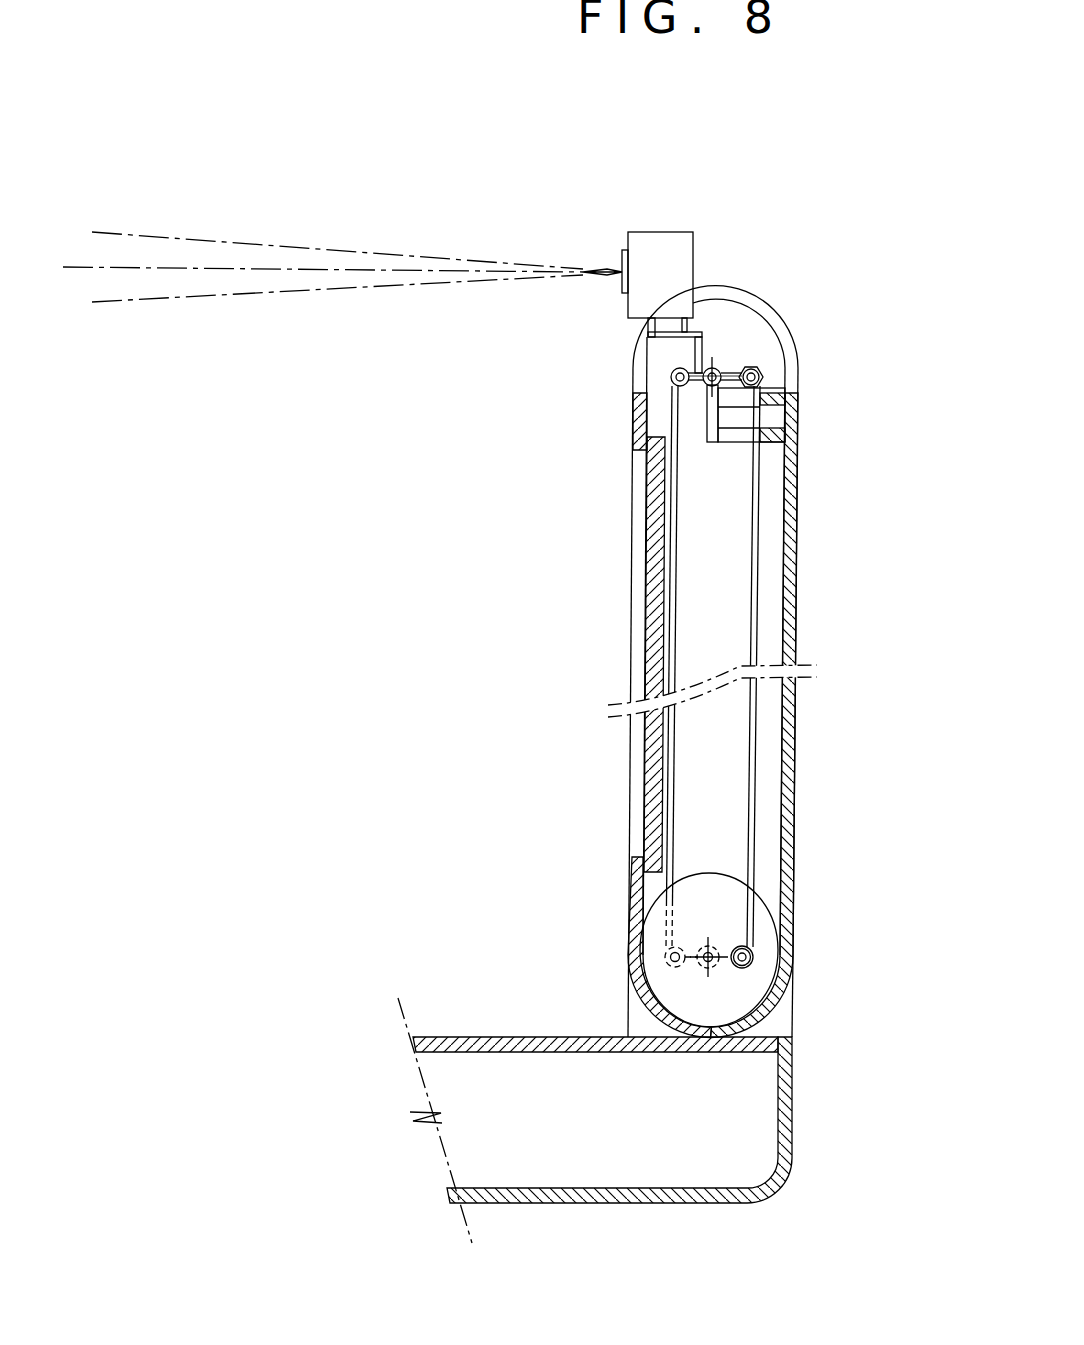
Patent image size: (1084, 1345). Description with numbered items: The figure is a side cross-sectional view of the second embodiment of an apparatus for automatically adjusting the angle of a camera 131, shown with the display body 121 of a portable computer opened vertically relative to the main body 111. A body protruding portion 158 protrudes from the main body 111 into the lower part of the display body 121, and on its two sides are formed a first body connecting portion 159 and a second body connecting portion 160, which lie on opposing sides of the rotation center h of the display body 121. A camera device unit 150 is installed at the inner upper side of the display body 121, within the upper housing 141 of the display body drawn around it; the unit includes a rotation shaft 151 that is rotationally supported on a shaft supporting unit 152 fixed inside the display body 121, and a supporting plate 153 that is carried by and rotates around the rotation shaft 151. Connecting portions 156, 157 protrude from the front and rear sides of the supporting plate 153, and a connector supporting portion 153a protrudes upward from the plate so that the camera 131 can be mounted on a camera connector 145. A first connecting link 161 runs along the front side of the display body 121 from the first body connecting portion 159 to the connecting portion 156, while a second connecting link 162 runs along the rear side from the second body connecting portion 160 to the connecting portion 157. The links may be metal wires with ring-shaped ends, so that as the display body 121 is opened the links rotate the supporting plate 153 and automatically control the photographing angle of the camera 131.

The main body 111 is at (810, 1124).
The display body 121 is at (812, 607).
The camera 131 is at (664, 229).
The upper housing 141 is at (638, 354).
The camera connector 145 is at (648, 327).
The camera device unit 150 is at (739, 346).
The rotation shaft 151 is at (720, 370).
The shaft supporting unit 152 is at (737, 438).
The supporting plate 153 is at (716, 368).
The connector supporting portion 153a is at (701, 370).
The connecting portion 156 is at (671, 378).
The connecting portion 157 is at (762, 376).
The body protruding portion 158 is at (767, 917).
The first body connecting portion 159 is at (667, 957).
The second body connecting portion 160 is at (753, 957).
The first connecting link 161 is at (668, 516).
The second connecting link 162 is at (755, 520).
The rotation center h is at (712, 960).